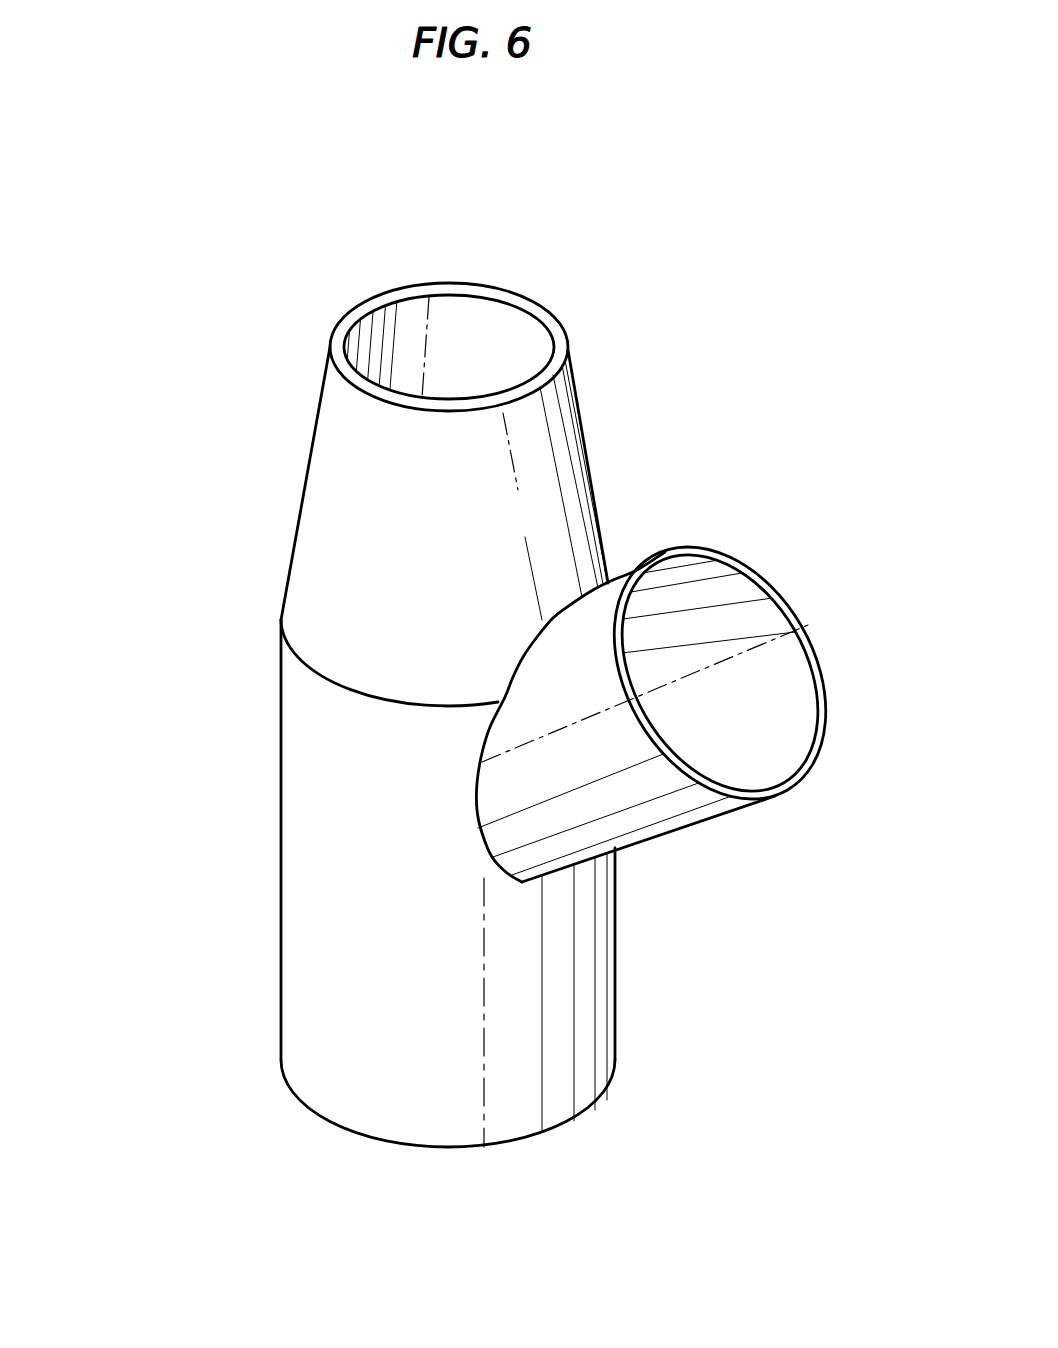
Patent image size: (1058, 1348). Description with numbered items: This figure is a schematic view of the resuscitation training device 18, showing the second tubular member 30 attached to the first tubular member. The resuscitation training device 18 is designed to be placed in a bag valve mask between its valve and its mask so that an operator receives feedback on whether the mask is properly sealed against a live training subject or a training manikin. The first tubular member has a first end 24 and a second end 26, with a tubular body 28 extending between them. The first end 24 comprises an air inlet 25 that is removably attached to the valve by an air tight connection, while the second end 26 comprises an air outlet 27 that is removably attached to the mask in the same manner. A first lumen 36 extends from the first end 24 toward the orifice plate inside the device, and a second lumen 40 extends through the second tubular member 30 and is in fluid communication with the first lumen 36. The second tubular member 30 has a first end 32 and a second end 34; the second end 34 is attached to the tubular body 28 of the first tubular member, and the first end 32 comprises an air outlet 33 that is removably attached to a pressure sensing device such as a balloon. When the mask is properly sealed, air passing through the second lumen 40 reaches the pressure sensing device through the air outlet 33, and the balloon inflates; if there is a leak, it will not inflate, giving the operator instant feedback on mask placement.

The resuscitation training device 18 is at (205, 613).
The first end 24 is at (330, 355).
The air inlet 25 is at (411, 326).
The first lumen 36 is at (524, 367).
The tubular body 28 is at (281, 840).
The second end 26 is at (363, 1137).
The air outlet 27 is at (467, 1147).
The second tubular member 30 is at (672, 832).
The first end 32 is at (818, 755).
The air outlet 33 is at (803, 683).
The second end 34 is at (522, 882).
The second lumen 40 is at (735, 623).